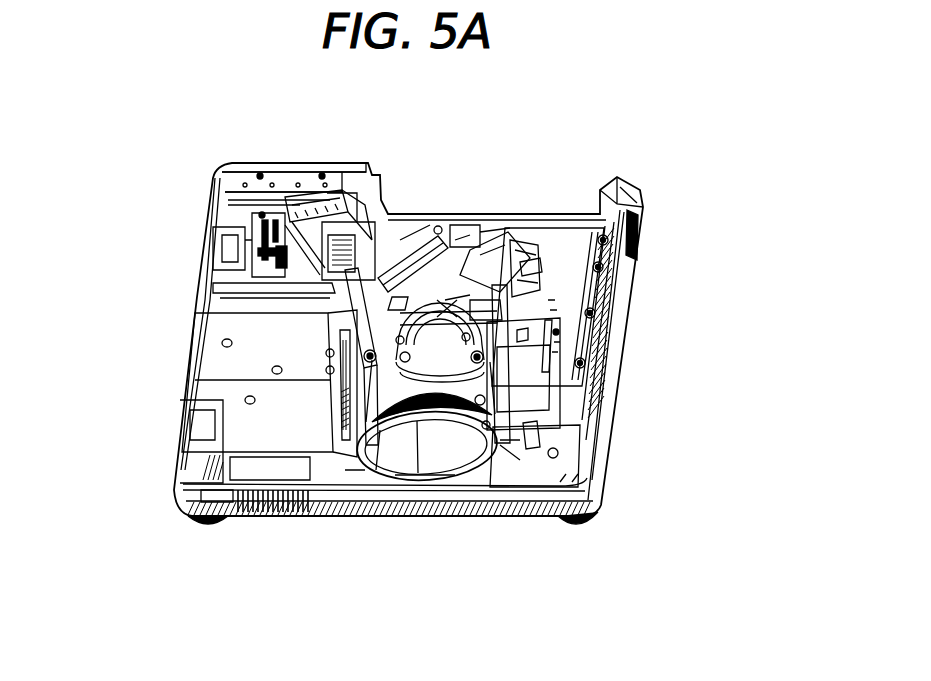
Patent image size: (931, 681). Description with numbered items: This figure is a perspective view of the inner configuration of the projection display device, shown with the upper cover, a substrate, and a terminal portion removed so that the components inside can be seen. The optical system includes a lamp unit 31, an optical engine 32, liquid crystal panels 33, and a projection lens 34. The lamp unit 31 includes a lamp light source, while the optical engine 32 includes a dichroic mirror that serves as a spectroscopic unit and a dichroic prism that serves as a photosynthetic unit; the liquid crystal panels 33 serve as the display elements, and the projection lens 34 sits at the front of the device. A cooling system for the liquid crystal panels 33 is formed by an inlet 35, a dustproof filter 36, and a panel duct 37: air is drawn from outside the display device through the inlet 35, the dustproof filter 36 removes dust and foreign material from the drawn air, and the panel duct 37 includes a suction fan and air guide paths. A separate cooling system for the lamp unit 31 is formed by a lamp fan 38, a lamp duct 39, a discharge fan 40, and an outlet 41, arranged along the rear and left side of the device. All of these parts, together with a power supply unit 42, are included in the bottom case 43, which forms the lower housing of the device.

The lamp unit 31 is at (220, 247).
The optical engine 32 is at (418, 247).
The liquid crystal panels 33 is at (505, 233).
The projection lens 34 is at (433, 463).
The inlet 35 is at (617, 378).
The dustproof filter 36 is at (617, 322).
The panel duct 37 is at (555, 270).
The lamp fan 38 is at (463, 228).
The lamp duct 39 is at (362, 198).
The discharge fan 40 is at (242, 302).
The outlet 41 is at (303, 165).
The power supply unit 42 is at (197, 393).
The bottom case 43 is at (600, 441).